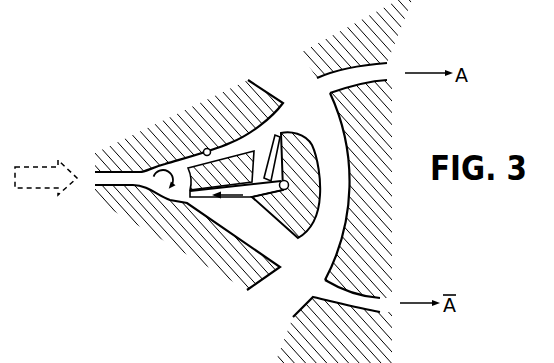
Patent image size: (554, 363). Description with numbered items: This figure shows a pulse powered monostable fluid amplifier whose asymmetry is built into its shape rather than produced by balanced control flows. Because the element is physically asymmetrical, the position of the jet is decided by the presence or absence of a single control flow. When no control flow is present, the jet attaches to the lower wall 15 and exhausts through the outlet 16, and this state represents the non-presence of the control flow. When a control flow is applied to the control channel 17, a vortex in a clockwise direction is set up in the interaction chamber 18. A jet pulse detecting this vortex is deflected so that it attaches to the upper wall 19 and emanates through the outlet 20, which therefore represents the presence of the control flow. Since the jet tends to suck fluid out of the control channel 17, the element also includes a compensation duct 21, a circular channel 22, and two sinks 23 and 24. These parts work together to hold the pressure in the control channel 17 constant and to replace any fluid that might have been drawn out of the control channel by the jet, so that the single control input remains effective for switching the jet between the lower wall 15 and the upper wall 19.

The lower wall 15 is at (203, 215).
The outlet 16 is at (380, 299).
The control channel 17 is at (284, 190).
The interaction chamber 18 is at (142, 172).
The upper wall 19 is at (205, 150).
The outlet 20 is at (381, 73).
The compensation duct 21 is at (267, 143).
The circular channel 22 is at (345, 191).
The sink 23 is at (282, 74).
The sink 24 is at (278, 293).